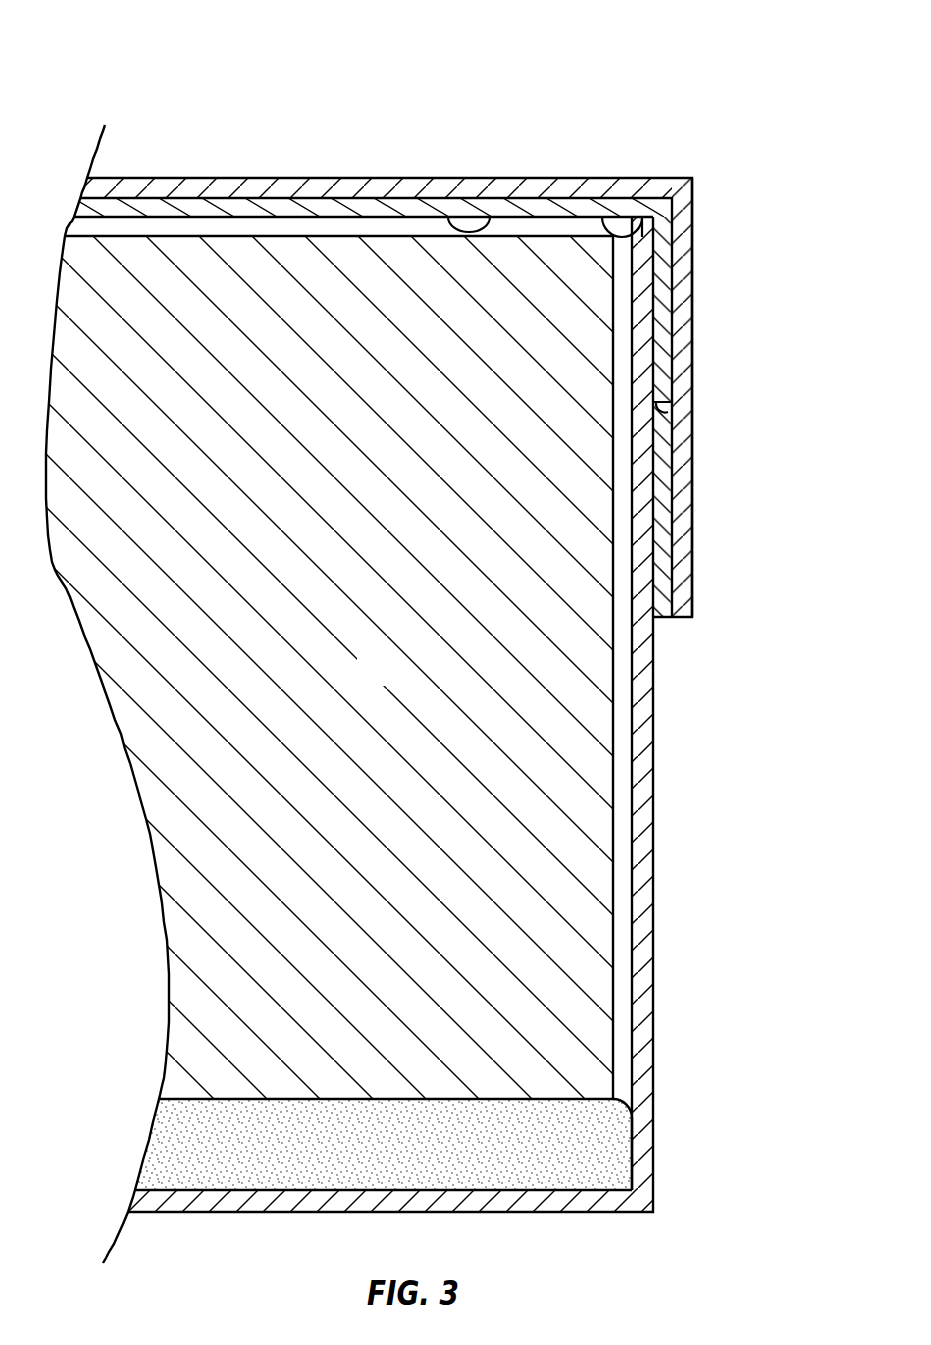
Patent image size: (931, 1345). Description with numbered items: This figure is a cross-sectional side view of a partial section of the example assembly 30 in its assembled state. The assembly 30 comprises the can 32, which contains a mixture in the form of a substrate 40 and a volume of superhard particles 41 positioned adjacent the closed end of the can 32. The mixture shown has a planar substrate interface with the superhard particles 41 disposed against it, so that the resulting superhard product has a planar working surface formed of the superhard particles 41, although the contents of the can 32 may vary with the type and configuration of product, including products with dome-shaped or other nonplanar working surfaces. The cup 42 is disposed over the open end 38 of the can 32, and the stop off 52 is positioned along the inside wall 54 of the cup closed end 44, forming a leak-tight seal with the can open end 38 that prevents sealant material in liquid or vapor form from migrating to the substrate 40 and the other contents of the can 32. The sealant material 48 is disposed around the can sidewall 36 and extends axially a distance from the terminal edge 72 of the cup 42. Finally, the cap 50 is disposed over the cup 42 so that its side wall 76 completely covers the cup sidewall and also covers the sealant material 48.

The assembly 30 is at (698, 70).
The can 32 is at (660, 810).
The can sidewall 36 is at (654, 720).
The can open end 38 is at (641, 222).
The substrate 40 is at (389, 681).
The volume of superhard particles 41 is at (430, 1165).
The cup 42 is at (660, 288).
The cup closed end 44 is at (337, 198).
The sealant material 48 is at (668, 470).
The cap 50 is at (700, 203).
The stop off 52 is at (620, 227).
The inside wall of cup closed end 54 is at (456, 226).
The terminal edge of cup 72 is at (664, 406).
The cap side wall 76 is at (694, 528).